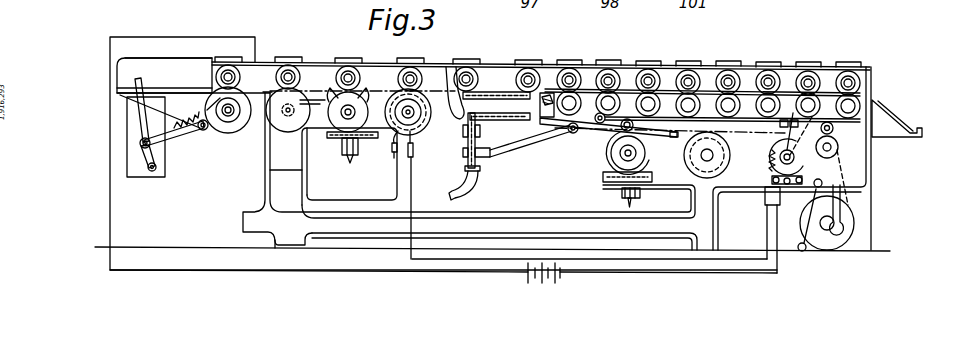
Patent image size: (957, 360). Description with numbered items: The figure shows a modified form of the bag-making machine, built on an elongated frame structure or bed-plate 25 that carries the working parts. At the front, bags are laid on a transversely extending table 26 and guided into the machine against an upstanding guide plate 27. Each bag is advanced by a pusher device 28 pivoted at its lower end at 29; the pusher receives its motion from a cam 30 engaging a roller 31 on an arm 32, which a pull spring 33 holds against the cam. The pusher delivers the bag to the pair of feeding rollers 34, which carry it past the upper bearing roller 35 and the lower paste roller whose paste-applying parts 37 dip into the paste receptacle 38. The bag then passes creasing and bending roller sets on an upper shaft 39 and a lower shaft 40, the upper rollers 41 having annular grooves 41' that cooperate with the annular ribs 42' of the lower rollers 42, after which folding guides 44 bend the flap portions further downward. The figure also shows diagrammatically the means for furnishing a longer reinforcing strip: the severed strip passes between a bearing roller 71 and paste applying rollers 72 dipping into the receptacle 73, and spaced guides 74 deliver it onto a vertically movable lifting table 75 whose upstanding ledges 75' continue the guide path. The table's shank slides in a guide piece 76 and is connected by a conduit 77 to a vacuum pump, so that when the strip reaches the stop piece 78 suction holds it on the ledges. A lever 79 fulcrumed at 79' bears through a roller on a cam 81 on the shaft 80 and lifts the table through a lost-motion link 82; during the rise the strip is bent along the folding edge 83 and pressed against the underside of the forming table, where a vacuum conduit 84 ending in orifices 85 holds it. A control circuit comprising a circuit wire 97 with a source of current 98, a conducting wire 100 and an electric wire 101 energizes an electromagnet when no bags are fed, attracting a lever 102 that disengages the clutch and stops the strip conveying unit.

The frame structure or bed-plate 25 is at (372, 70).
The table 26 is at (161, 86).
The guide plate 27 is at (188, 64).
The pusher device 28 is at (140, 113).
The pivot 29 is at (152, 178).
The cam 30 is at (229, 126).
The roller 31 is at (205, 131).
The arm 32 is at (173, 140).
The pull spring 33 is at (201, 106).
The feeding rollers 34 is at (231, 72).
The upper bearing roller 35 is at (348, 66).
The paste-applying parts 37 is at (333, 137).
The receptacle 38 is at (356, 139).
The shaft 39 is at (420, 80).
The shaft 40 is at (420, 115).
The rollers 41 is at (346, 84).
The annular groove 41' is at (344, 98).
The rollers 42 is at (379, 152).
The annular ribs 42' is at (387, 195).
The folding guides 44 is at (444, 94).
The bearing roller 71 is at (634, 126).
The paste applying rollers 72 is at (647, 153).
The receptacle 73 is at (605, 181).
The spaced guides 74 is at (589, 137).
The lifting table 75 is at (505, 137).
The ledges 75' is at (496, 102).
The guide piece 76 is at (463, 152).
The conduit 77 is at (462, 193).
The stop piece 78 is at (463, 131).
The lever 79 is at (531, 148).
The fulcrum 79' is at (561, 141).
The shaft 80 is at (613, 91).
The cam 81 is at (604, 66).
The lost-motion link 82 is at (462, 171).
The folding edge 83 is at (550, 97).
The vacuum conduit 84 is at (463, 70).
The orifices 85 is at (545, 92).
The circuit wire 97 is at (453, 273).
The source of current 98 is at (560, 275).
The conducting wire 100 is at (264, 173).
The electric wire 101 is at (678, 277).
The lever 102 is at (814, 189).